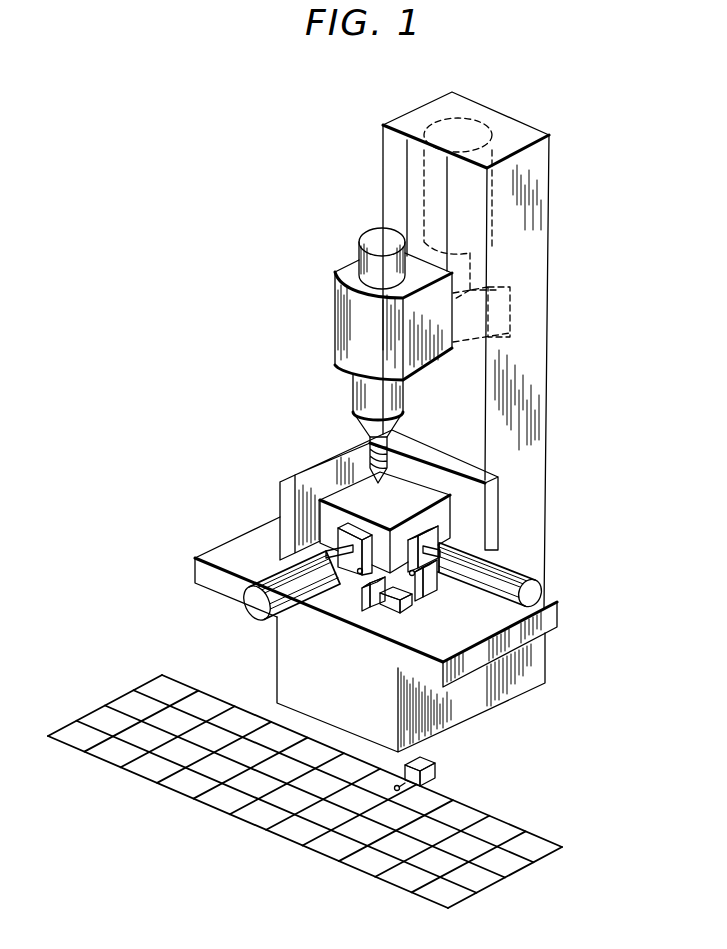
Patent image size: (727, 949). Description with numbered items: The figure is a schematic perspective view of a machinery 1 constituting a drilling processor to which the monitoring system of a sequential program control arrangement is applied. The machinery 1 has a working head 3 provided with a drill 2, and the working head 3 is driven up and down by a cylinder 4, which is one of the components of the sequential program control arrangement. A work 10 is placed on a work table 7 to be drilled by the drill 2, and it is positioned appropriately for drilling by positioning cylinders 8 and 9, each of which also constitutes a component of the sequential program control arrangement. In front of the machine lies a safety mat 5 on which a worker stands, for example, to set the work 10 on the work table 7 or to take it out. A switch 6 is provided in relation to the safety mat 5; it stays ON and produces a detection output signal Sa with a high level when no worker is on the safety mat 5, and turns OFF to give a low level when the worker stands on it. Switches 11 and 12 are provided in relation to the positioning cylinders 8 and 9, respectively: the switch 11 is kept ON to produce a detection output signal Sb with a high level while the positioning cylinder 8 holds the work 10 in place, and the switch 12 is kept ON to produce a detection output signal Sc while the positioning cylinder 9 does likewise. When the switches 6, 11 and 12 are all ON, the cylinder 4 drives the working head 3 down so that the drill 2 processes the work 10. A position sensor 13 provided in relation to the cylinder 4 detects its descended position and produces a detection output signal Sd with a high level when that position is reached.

The machinery 1 is at (262, 383).
The drill 2 is at (362, 460).
The working head 3 is at (349, 345).
The cylinder 4 is at (437, 120).
The safety mat 5 is at (285, 840).
The switch 6 is at (435, 760).
The work table 7 is at (498, 493).
The positioning cylinder 8 is at (538, 592).
The positioning cylinder 9 is at (247, 603).
The work 10 is at (342, 497).
The switch 11 is at (428, 590).
The switch 12 is at (367, 602).
The position sensor 13 is at (510, 307).
The detection output signal Sa is at (435, 775).
The detection output signal Sb is at (545, 638).
The detection output signal Sc is at (500, 657).
The detection output signal Sd is at (519, 334).